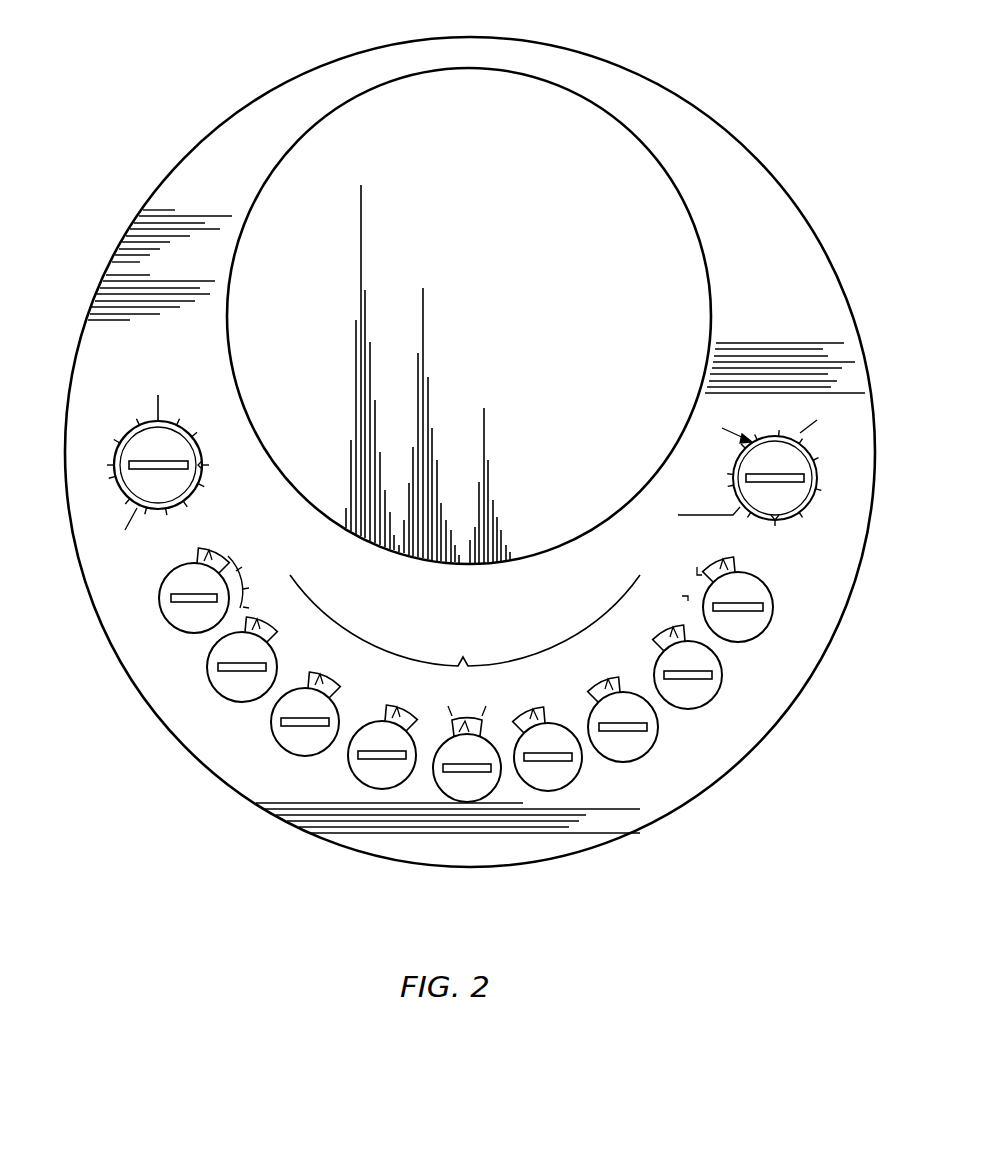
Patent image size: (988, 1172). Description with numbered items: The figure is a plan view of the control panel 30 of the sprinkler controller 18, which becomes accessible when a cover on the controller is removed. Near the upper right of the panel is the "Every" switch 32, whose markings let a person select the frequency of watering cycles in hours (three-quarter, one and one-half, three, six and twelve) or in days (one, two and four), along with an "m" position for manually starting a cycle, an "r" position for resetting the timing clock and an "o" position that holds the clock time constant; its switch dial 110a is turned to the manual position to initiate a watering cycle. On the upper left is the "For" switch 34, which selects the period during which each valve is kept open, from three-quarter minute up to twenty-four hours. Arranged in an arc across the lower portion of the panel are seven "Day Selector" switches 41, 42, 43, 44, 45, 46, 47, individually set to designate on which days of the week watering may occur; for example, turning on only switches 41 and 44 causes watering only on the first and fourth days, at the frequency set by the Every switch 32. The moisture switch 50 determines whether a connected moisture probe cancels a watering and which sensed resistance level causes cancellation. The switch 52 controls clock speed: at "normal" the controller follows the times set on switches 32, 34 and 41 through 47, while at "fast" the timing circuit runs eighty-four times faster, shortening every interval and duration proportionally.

The controller 18 is at (770, 166).
The control panel 30 is at (822, 627).
The Every switch 32 is at (802, 474).
The switch dial 110a is at (843, 477).
The For switch 34 is at (100, 402).
The moisture switch 50 is at (162, 613).
The Day Selector switch 41 is at (222, 687).
The Day Selector switch 42 is at (285, 750).
The Day Selector switch 43 is at (373, 782).
The Day Selector switch 44 is at (468, 797).
The Day Selector switch 45 is at (554, 787).
The Day Selector switch 46 is at (640, 760).
The Day Selector switch 47 is at (707, 700).
The clock speed switch 52 is at (757, 630).